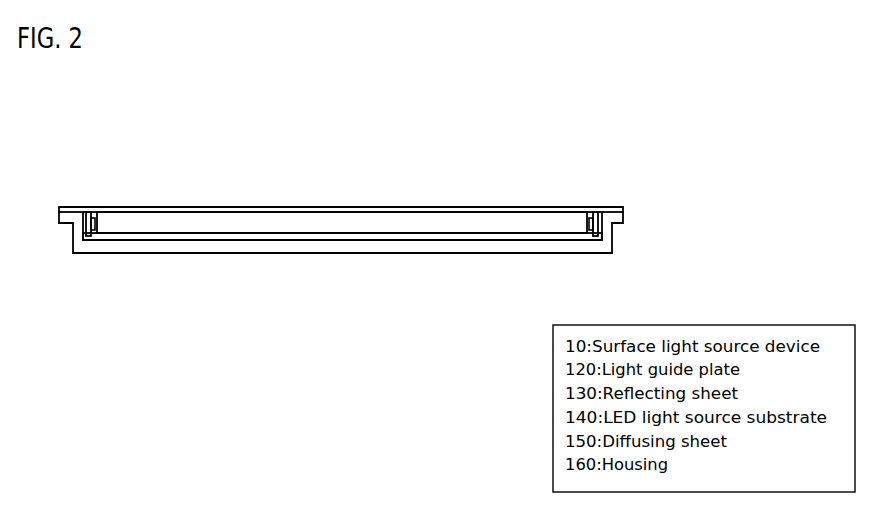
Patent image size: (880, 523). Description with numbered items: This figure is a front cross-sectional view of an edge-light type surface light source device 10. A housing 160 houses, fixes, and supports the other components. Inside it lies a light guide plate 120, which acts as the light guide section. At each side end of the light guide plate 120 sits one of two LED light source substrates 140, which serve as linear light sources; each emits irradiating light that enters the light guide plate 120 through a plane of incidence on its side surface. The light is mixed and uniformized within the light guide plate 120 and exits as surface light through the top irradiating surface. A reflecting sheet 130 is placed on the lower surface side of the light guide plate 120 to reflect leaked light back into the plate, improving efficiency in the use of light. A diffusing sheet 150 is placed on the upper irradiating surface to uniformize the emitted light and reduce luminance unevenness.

The surface light source device 10 is at (608, 148).
The light guide plate 120 is at (433, 222).
The reflecting sheet 130 is at (334, 241).
The LED light source substrate 140 is at (90, 207).
The diffusing sheet 150 is at (336, 207).
The housing 160 is at (613, 245).